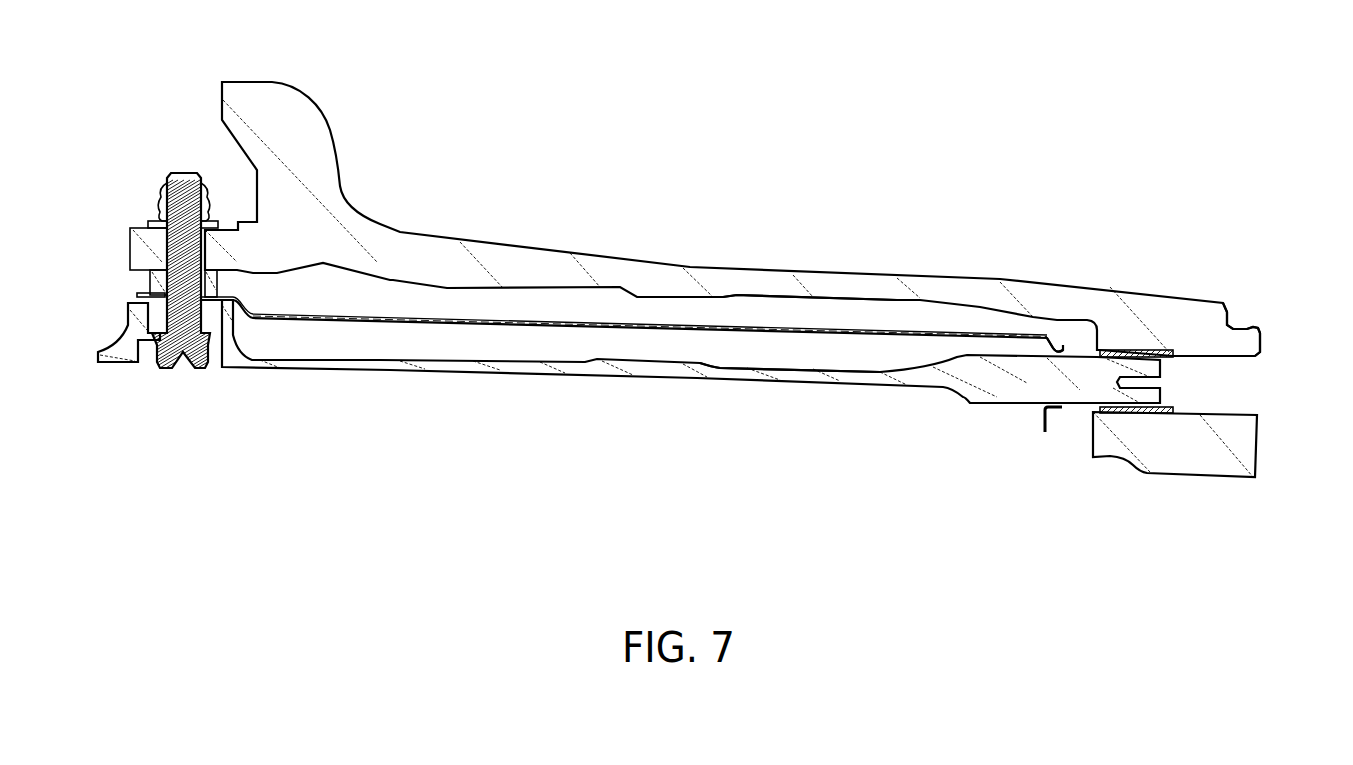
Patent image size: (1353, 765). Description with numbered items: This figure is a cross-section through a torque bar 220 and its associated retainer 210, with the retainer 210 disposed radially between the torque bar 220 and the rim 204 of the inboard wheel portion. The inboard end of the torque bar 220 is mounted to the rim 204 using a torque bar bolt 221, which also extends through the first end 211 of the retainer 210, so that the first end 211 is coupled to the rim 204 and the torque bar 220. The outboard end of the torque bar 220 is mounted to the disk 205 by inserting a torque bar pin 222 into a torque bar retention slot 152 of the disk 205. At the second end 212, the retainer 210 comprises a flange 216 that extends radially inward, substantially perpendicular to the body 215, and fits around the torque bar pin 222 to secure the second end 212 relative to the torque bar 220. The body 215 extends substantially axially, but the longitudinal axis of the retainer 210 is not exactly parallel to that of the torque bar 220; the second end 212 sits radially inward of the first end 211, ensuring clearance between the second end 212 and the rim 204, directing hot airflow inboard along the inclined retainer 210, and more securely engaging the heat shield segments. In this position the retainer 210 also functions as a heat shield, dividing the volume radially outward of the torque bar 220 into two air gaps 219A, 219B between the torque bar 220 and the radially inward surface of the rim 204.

The torque bar retention slot 152 is at (1233, 380).
The rim 204 is at (520, 268).
The disk 205 is at (1165, 455).
The retainer 210 is at (631, 375).
The first end 211 is at (238, 297).
The second end 212 is at (1053, 335).
The body 215 is at (658, 328).
The flange 216 is at (1035, 418).
The air gap 219A is at (747, 353).
The air gap 219B is at (757, 310).
The torque bar 220 is at (598, 370).
The torque bar bolt 221 is at (183, 372).
The torque bar pin 222 is at (1087, 383).